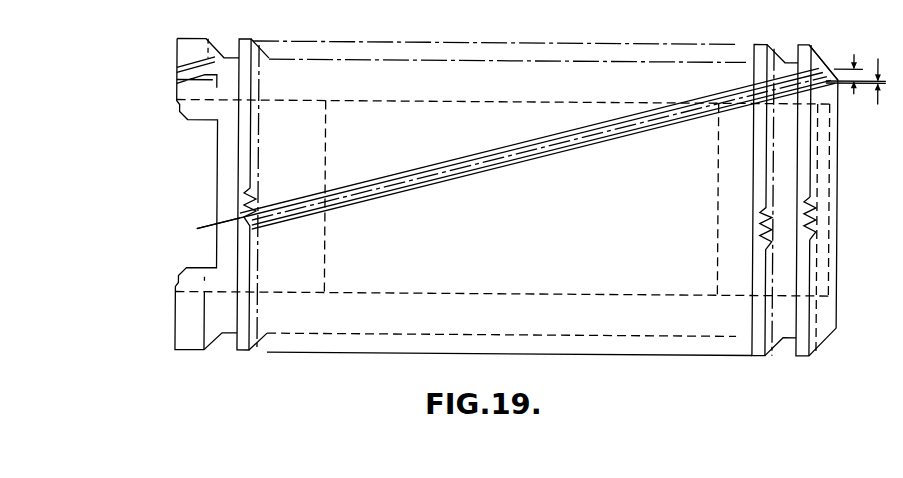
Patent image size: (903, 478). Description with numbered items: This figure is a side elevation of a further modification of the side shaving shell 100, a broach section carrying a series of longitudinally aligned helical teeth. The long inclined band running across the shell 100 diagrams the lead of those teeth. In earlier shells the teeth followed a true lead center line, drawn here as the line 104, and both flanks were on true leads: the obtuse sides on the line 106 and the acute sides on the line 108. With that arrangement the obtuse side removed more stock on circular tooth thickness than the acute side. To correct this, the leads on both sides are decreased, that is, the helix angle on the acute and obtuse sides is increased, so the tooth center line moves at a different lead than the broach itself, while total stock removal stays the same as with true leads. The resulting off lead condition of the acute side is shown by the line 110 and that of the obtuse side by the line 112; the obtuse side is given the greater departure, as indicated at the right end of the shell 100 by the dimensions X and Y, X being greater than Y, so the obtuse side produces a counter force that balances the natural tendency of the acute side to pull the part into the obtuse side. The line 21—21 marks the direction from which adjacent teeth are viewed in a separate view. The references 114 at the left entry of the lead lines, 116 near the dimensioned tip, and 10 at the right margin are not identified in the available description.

The connector assembly 10 is at (849, 201).
The view line 21— 21 is at (818, 212).
The side shaving shell 100 is at (674, 358).
The true lead center line 104 is at (366, 189).
The true lead line of obtuse sides 106 is at (502, 147).
The true lead line of acute sides 108 is at (496, 163).
The off lead condition of acute side 110 is at (603, 134).
The off lead condition of obtuse side 112 is at (584, 133).
The fiber entry 114 is at (240, 214).
The fiber tip 116 is at (826, 62).